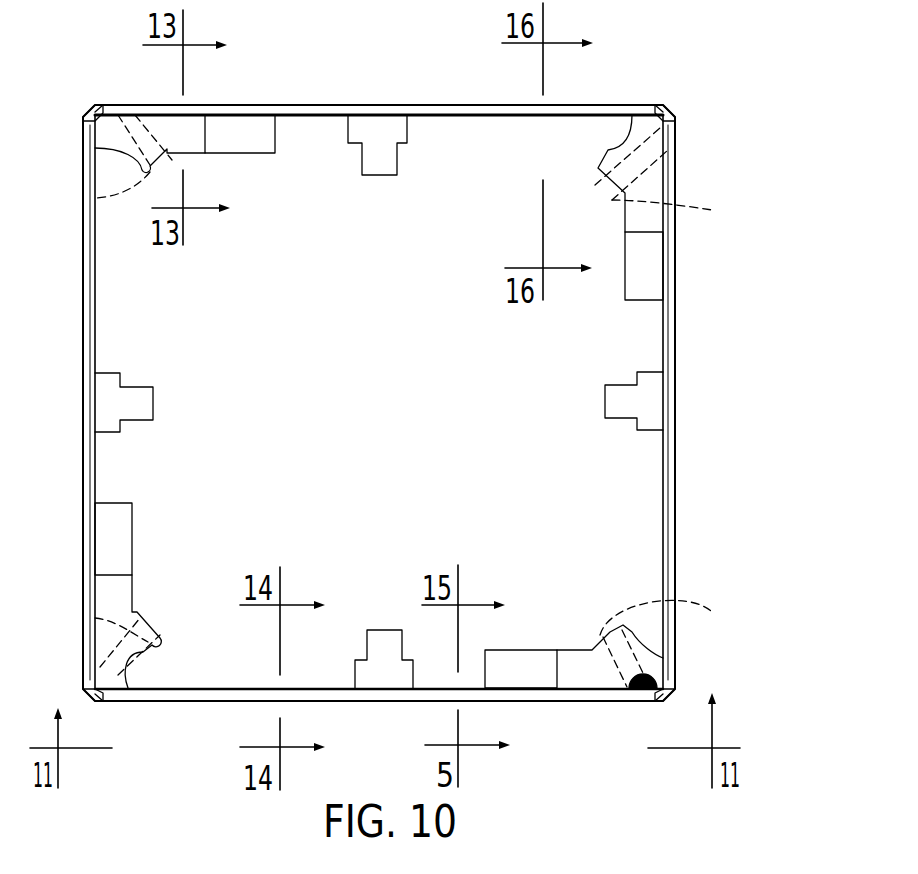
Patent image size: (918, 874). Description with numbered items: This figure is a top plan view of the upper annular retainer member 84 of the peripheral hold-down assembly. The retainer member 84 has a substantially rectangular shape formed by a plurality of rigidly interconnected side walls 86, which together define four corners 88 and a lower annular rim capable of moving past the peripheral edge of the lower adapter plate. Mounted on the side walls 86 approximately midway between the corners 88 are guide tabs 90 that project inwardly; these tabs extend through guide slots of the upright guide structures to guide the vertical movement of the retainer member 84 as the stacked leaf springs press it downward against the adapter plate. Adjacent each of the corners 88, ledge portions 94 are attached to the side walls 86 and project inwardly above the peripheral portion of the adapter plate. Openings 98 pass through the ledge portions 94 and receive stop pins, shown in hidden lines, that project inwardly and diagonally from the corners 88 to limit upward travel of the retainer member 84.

The upper annular retainer member 84 is at (684, 347).
The side walls 86 is at (432, 700).
The corners 88 is at (85, 108).
The guide tabs 90 is at (382, 177).
The ledge portions 94 is at (167, 125).
The openings 98 is at (95, 198).